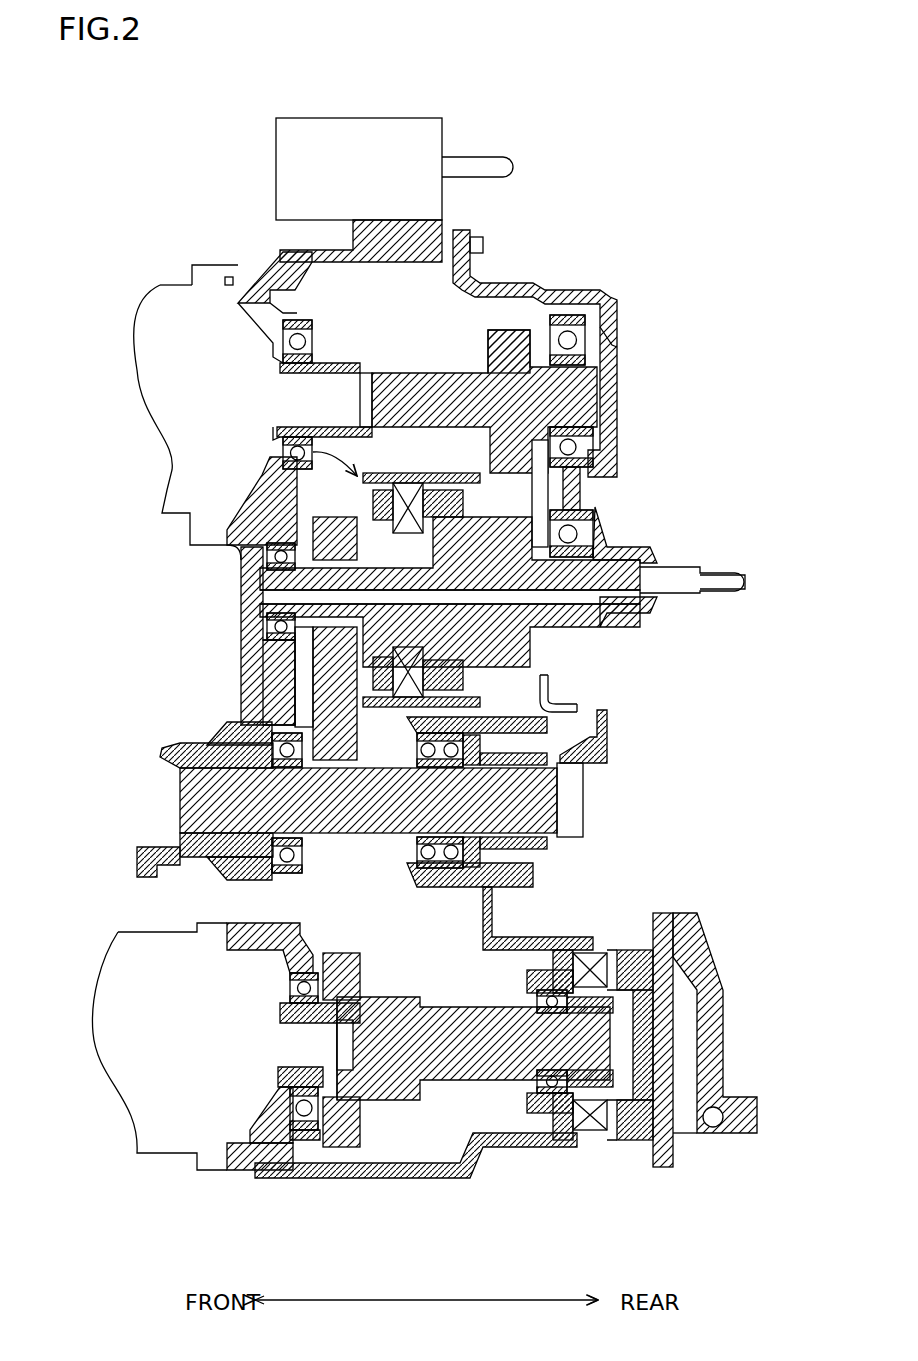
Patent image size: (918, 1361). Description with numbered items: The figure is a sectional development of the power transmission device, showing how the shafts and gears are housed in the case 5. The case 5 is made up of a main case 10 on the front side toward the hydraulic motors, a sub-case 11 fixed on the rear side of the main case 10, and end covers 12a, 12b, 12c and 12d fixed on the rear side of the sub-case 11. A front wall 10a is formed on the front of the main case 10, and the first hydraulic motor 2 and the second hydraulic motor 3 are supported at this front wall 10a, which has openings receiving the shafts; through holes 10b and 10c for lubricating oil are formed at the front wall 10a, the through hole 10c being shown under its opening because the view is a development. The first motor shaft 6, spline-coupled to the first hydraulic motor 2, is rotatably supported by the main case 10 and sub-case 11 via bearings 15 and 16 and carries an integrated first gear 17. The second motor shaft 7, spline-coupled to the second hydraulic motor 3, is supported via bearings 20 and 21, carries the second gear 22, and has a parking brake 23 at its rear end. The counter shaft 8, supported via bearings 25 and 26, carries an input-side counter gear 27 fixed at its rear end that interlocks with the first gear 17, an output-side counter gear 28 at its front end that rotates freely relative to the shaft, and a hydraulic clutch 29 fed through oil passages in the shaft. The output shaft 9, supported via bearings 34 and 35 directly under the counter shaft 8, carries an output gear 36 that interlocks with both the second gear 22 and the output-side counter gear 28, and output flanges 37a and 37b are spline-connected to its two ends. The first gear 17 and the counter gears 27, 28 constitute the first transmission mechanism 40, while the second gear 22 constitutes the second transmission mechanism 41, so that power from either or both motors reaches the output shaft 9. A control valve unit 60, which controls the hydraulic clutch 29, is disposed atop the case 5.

The first hydraulic motor 2 is at (172, 313).
The second hydraulic motor 3 is at (120, 970).
The case 5 is at (515, 218).
The first motor shaft 6 is at (418, 373).
The second motor shaft 7 is at (490, 1050).
The counter shaft 8 is at (607, 545).
The output shaft 9 is at (545, 798).
The main case 10 is at (245, 270).
The front wall 10a is at (246, 630).
The through hole 10b is at (297, 313).
The through hole 10c is at (303, 1135).
The sub-case 11 is at (535, 283).
The end cover 12a is at (612, 345).
The end cover 12b is at (660, 548).
The end cover 12c is at (657, 913).
The end cover 12d is at (720, 985).
The bearing 15 is at (300, 335).
The bearing 16 is at (588, 330).
The first gear 17 is at (490, 335).
The bearing 20 is at (297, 1103).
The bearing 21 is at (553, 1135).
The second gear 22 is at (348, 983).
The parking brake 23 is at (592, 955).
The bearing 25 is at (265, 665).
The bearing 26 is at (580, 492).
The input-side counter gear 27 is at (575, 700).
The output-side counter gear 28 is at (243, 573).
The hydraulic clutch 29 is at (283, 455).
The bearing 34 is at (262, 722).
The bearing 35 is at (430, 870).
The output gear 36 is at (372, 880).
The output flange 37a is at (148, 850).
The output flange 37b is at (605, 740).
The first transmission mechanism 40 is at (302, 688).
The second transmission mechanism 41 is at (377, 1095).
The control valve unit 60 is at (416, 120).